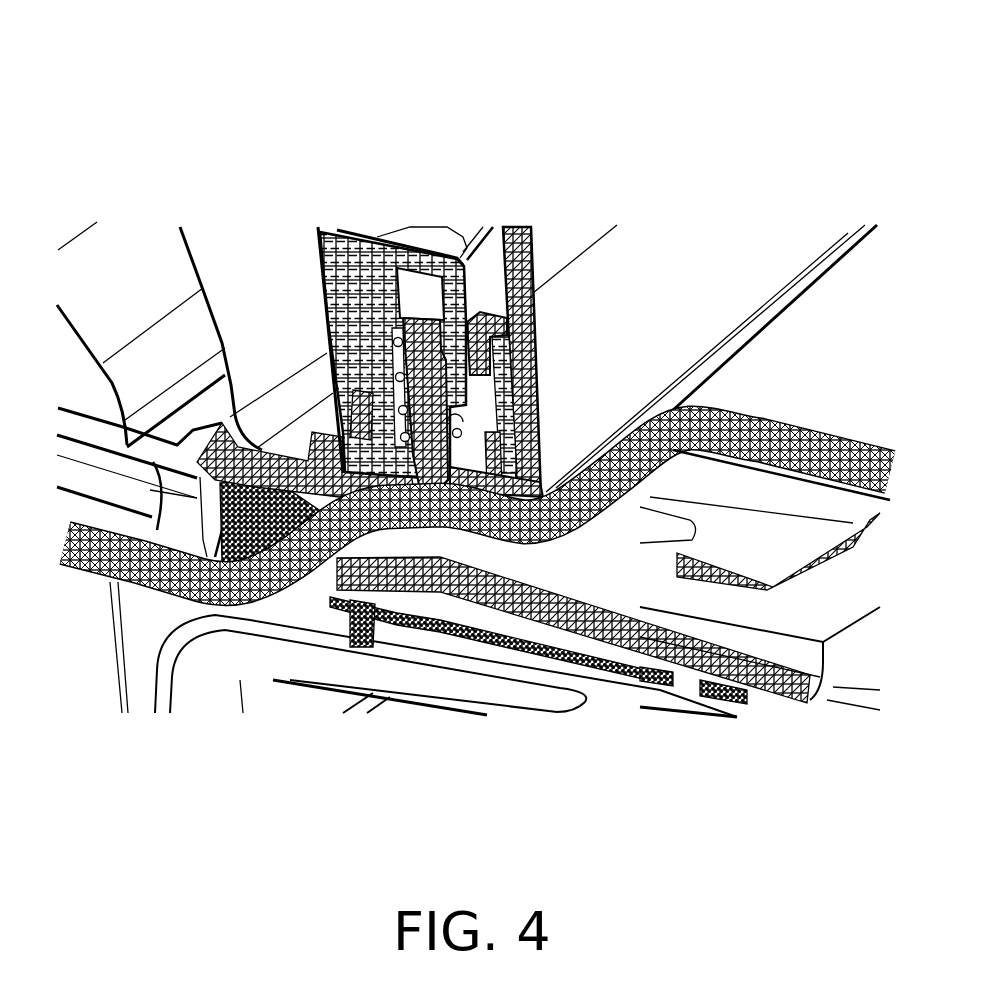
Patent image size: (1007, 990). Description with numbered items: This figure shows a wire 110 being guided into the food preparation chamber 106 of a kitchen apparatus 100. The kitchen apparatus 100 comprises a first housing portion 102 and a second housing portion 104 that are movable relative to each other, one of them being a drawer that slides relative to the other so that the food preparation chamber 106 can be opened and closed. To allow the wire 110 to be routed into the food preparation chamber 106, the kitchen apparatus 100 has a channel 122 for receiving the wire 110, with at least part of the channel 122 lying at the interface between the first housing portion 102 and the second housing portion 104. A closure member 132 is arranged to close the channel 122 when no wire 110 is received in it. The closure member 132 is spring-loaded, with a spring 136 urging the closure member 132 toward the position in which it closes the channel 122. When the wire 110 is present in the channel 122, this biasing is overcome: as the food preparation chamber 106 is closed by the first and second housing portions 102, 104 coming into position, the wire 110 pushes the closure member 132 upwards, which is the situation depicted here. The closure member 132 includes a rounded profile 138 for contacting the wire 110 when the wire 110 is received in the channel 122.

The kitchen apparatus 100 is at (138, 92).
The first housing portion 102 is at (235, 492).
The second housing portion 104 is at (630, 597).
The food preparation chamber 106 is at (80, 687).
The wire 110 is at (230, 593).
The channel 122 is at (628, 555).
The closure member 132 is at (410, 500).
The spring 136 is at (407, 413).
The rounded profile 138 is at (448, 490).